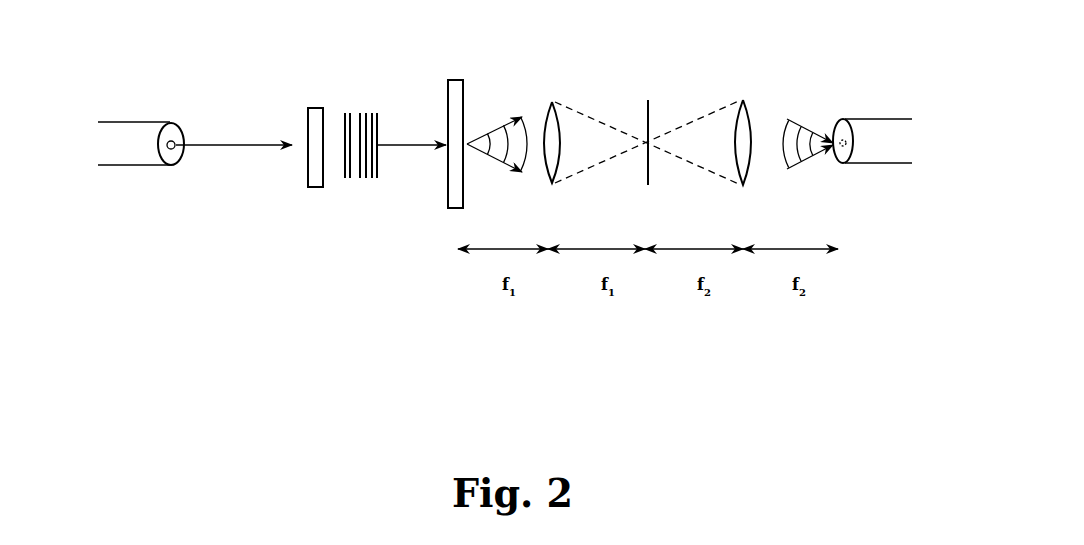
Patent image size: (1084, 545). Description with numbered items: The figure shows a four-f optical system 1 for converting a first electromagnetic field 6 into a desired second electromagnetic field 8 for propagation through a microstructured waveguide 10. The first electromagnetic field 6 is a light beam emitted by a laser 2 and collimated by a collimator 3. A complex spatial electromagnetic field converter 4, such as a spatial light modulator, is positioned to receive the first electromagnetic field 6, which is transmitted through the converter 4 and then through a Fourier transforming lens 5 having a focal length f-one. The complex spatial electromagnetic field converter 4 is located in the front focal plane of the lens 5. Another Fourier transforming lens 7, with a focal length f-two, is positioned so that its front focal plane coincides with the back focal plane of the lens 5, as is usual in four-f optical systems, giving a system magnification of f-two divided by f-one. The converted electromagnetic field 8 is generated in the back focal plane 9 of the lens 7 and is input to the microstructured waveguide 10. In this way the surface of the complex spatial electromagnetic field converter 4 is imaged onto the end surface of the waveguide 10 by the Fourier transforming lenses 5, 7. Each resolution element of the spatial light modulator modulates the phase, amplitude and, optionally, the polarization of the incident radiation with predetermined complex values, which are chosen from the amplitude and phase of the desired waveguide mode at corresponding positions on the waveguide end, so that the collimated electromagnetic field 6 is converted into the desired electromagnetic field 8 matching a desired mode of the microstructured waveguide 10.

The 4f optical system 1 is at (642, 72).
The laser 2 is at (127, 129).
The collimator 3 is at (311, 108).
The complex spatial electromagnetic field converter 4 is at (457, 80).
The Fourier transforming lens 5 is at (550, 104).
The first electromagnetic field 6 is at (358, 118).
The Fourier transforming lens 7 is at (746, 100).
The second electromagnetic field 8 is at (808, 126).
The back focal plane 9 is at (838, 120).
The microstructured waveguide 10 is at (896, 121).